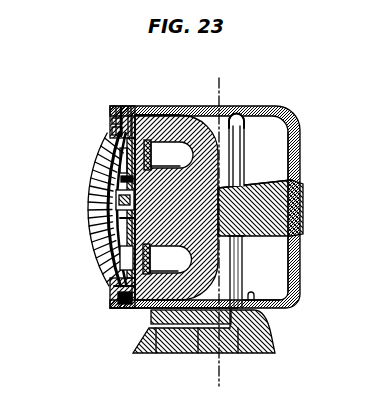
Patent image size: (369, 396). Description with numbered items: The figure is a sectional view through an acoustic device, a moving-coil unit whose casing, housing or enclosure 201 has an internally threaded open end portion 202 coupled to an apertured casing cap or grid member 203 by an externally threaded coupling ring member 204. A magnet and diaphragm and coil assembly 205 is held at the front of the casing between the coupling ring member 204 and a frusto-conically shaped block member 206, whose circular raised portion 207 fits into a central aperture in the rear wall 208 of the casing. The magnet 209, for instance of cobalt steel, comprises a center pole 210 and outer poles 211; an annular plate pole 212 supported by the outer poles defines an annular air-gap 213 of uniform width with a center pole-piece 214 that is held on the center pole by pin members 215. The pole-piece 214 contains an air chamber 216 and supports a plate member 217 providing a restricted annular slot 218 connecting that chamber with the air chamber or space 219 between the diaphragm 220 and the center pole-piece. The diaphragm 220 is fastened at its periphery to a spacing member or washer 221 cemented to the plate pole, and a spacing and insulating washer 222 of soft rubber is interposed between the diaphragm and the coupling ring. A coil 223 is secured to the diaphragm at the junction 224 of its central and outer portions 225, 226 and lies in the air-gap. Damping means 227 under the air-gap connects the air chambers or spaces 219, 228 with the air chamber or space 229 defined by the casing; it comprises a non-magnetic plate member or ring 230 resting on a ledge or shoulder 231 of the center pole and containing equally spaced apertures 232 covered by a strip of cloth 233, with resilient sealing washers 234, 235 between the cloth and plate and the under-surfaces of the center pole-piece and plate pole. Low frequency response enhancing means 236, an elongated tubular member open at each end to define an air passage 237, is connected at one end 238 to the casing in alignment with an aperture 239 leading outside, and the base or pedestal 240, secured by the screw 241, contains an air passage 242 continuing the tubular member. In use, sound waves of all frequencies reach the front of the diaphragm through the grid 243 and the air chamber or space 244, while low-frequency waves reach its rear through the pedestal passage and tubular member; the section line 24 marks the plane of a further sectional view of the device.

The casing 201 is at (242, 100).
The internally threaded open end portion 202 is at (163, 106).
The apertured casing cap or grid member 203 is at (103, 101).
The externally threaded coupling ring member 204 is at (140, 105).
The magnet and diaphragm and coil assembly 205 is at (190, 108).
The frusto-conically shaped block member 206 is at (247, 177).
The circular raised portion 207 is at (295, 206).
The rear wall 208 is at (292, 152).
The magnet 209 is at (232, 145).
The center pole 210 is at (212, 231).
The outer poles 211 is at (152, 105).
The plate pole 212 is at (120, 300).
The annular air-gap 213 is at (103, 283).
The center pole-piece 214 is at (98, 258).
The pin members 215 is at (97, 162).
The air chamber 216 is at (96, 228).
The plate member 217 is at (100, 205).
The restricted annular slot 218 is at (97, 180).
The air chamber or space 219 is at (93, 170).
The diaphragm 220 is at (102, 193).
The spacing member or washer 221 is at (116, 100).
The spacing and insulating washer 222 is at (109, 100).
The coil 223 is at (122, 100).
The junction 224 is at (100, 137).
The central portion of the diaphragm 225 is at (100, 272).
The outer portion of the diaphragm 226 is at (104, 125).
The damping means 227 is at (130, 303).
The air chamber or space 228 is at (104, 113).
The air chamber or space 229 is at (262, 272).
The plate member or ring 230 is at (143, 140).
The ledge or shoulder 231 is at (142, 243).
The apertures 232 is at (143, 155).
The strip of cloth 233 is at (142, 258).
The sealing washer 234 is at (97, 150).
The sealing washer 235 is at (108, 296).
The low frequency response enhancing means 236 is at (236, 125).
The air passage 237 is at (235, 275).
The end of tubular member 238 is at (240, 292).
The aperture 239 is at (240, 338).
The base or pedestal 240 is at (262, 335).
The screw 241 is at (182, 345).
The air passage 242 is at (143, 321).
The grid 243 is at (88, 238).
The air chamber or space 244 is at (92, 215).
The section line 24 is at (198, 72).